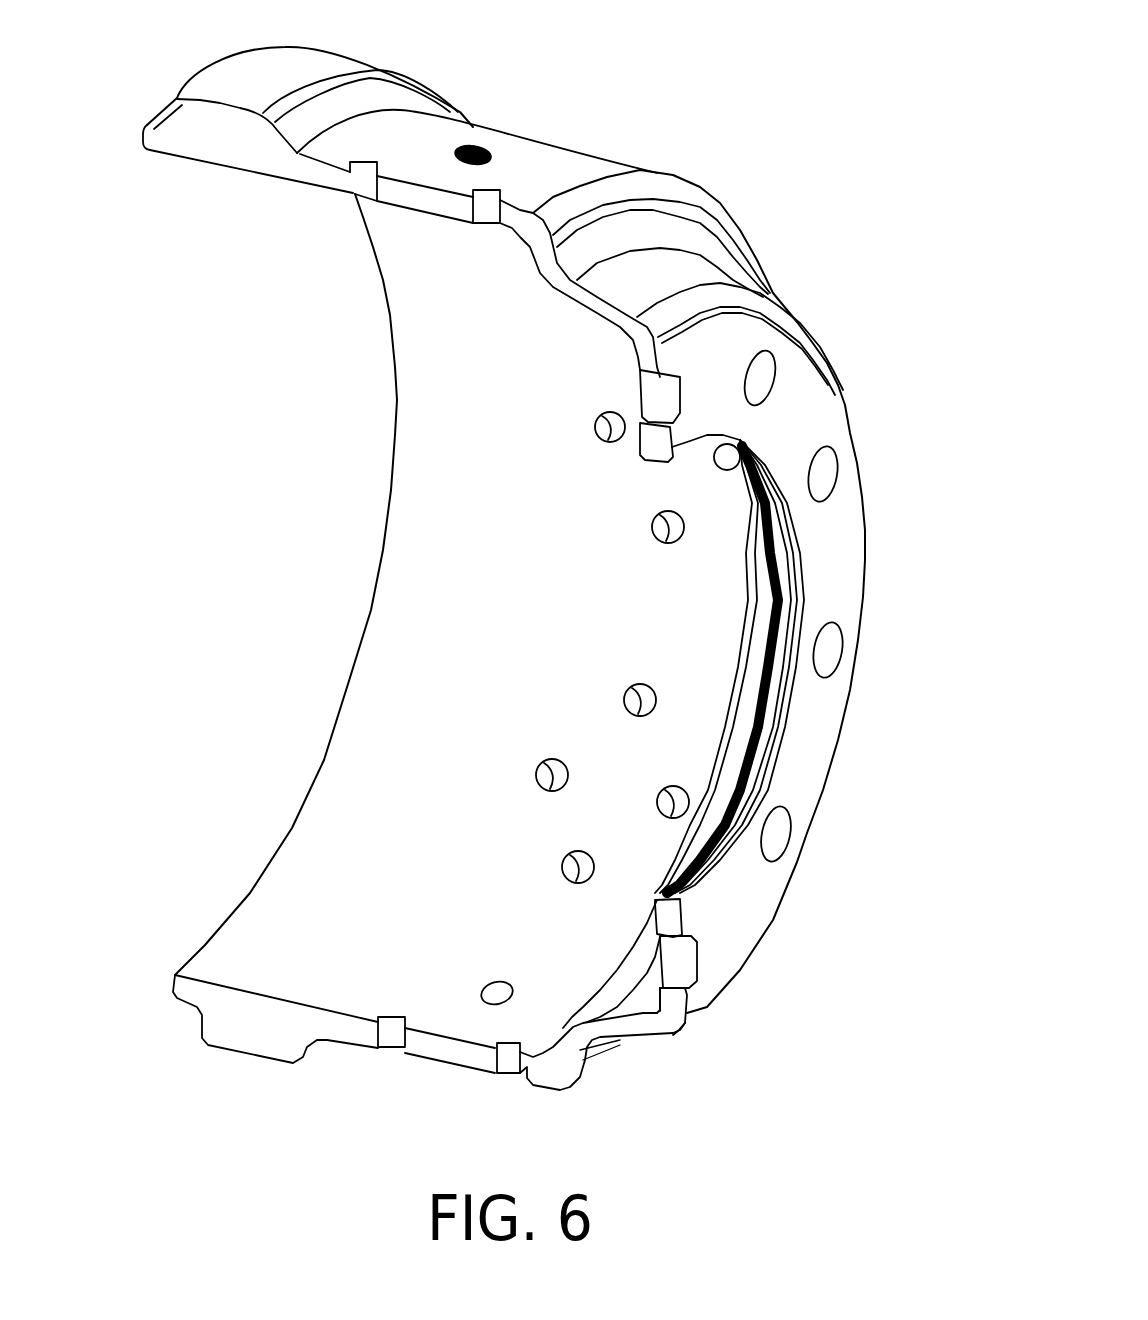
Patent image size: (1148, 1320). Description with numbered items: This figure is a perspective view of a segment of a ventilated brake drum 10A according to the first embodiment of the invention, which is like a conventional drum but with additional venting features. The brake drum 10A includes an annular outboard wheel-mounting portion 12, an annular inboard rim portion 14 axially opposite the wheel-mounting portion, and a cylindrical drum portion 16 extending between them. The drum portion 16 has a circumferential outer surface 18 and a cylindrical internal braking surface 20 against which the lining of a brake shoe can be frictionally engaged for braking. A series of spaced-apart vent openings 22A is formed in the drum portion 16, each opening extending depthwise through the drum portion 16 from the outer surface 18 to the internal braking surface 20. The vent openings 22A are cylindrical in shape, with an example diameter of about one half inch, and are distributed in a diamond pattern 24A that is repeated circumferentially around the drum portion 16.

The brake drum 10A is at (818, 106).
The annular outboard wheel-mounting portion 12 is at (810, 382).
The annular inboard rim portion 14 is at (218, 103).
The drum portion 16 is at (658, 172).
The circumferential outer surface 18 is at (423, 148).
The cylindrical internal braking surface 20 is at (382, 941).
The vent openings 22A is at (652, 527).
The diamond pattern 24A is at (640, 680).